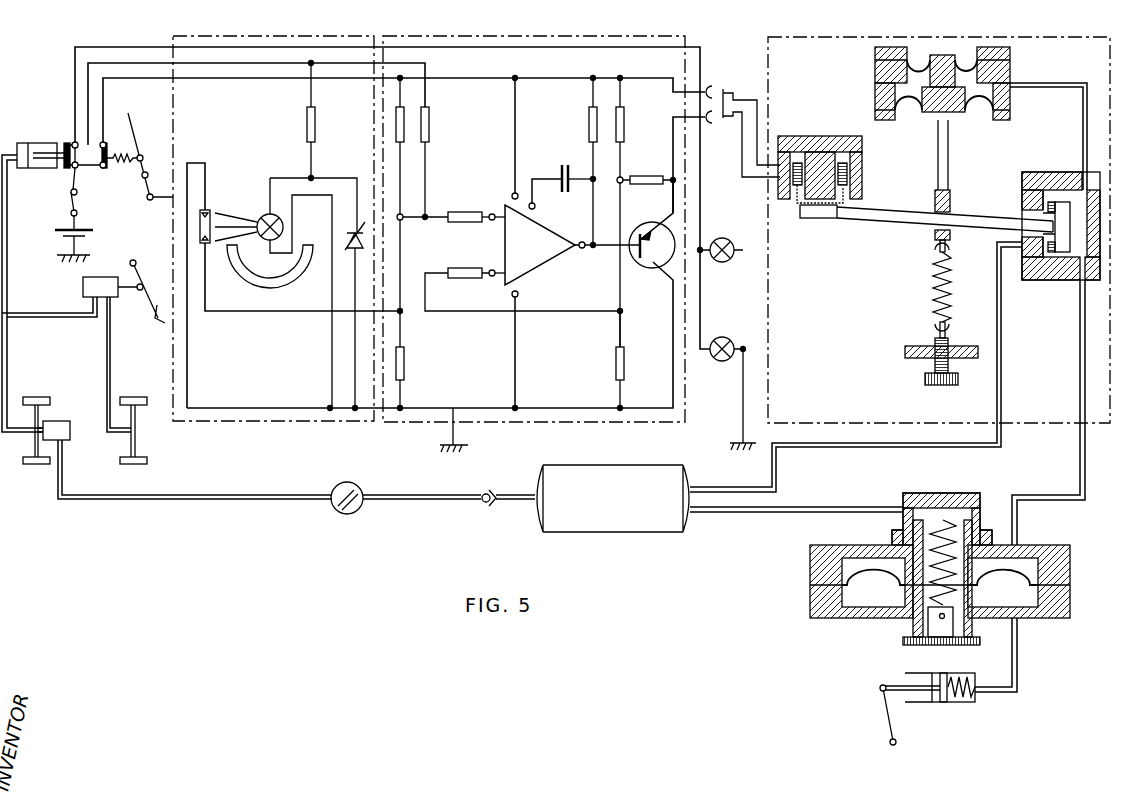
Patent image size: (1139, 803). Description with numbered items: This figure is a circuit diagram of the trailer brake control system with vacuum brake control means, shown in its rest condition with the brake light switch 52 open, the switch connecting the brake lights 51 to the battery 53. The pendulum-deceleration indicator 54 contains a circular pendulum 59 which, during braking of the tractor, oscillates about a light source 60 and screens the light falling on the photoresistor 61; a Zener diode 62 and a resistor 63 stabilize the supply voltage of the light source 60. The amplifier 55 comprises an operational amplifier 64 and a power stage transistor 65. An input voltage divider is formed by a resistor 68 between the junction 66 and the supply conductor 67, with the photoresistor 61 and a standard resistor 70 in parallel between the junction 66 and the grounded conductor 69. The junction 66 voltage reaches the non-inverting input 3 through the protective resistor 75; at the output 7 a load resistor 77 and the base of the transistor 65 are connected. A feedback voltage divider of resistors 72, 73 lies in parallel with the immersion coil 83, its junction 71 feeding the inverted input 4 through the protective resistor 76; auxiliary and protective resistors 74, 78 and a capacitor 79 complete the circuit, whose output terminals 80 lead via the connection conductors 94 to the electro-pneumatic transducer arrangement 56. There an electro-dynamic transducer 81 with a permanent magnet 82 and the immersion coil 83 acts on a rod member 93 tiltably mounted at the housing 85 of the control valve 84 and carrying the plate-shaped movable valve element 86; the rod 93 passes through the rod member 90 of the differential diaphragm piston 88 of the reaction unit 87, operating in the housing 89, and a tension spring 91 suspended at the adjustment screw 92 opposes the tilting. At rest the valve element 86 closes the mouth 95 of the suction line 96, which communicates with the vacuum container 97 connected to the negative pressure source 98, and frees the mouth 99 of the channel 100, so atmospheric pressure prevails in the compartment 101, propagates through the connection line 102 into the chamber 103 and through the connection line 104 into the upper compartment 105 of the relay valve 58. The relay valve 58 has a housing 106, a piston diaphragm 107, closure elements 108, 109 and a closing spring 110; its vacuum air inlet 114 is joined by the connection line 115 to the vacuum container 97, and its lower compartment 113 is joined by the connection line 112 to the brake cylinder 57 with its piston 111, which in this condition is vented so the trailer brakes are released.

The non-inverting input 3 is at (492, 213).
The inverted input 4 is at (491, 277).
The output 7 is at (582, 249).
The brake lights 51 is at (722, 238).
The brake light switch 52 is at (73, 143).
The battery 53 is at (88, 233).
The pendulum-deceleration indicator 54 is at (318, 38).
The amplifier 55 is at (560, 38).
The electro-pneumatic transducer arrangement 56 is at (840, 38).
The brake cylinder 57 is at (964, 701).
The relay valve 58 is at (833, 620).
The circular pendulum 59 is at (237, 262).
The light source 60 is at (262, 219).
The photoresistor 61 is at (211, 210).
The Zener diode 62 is at (350, 240).
The resistor 63 is at (307, 126).
The operational amplifier 64 is at (512, 247).
The transistor 65 is at (647, 266).
The junction 66 is at (403, 220).
The supply conductor 67 is at (486, 82).
The resistor 68 is at (396, 135).
The conductor 69 is at (486, 405).
The standard resistor 70 is at (404, 363).
The junction 71 is at (623, 184).
The resistor 72 is at (625, 126).
The resistor 73 is at (650, 176).
The auxiliary resistor 74 is at (430, 126).
The protective resistor 75 is at (463, 211).
The protective resistor 76 is at (463, 279).
The load resistor 77 is at (590, 126).
The protective resistor 78 is at (614, 365).
The capacitor 79 is at (560, 165).
The output terminals 80 is at (724, 90).
The electro-dynamic transducer 81 is at (816, 218).
The permanent magnet 82 is at (821, 146).
The immersion coil 83 is at (850, 174).
The control valve 84 is at (1016, 168).
The housing 85 is at (1037, 195).
The movable valve element 86 is at (1062, 202).
The reaction unit 87 is at (890, 43).
The differential diaphragm piston 88 is at (942, 55).
The housing 89 is at (883, 79).
The rod member 90 is at (940, 153).
The tension spring 91 is at (932, 295).
The adjustment screw 92 is at (934, 366).
The rod member 93 is at (886, 220).
The connection conductors 94 is at (755, 150).
The mouth 95 is at (1043, 267).
The suction line 96 is at (417, 502).
The vacuum container 97 is at (605, 524).
The negative pressure source 98 is at (58, 425).
The mouth 99 is at (1050, 175).
The channel 100 is at (1023, 210).
The compartment 101 is at (1075, 250).
The connection line 102 is at (1041, 86).
The chamber 103 is at (967, 70).
The connection line 104 is at (1081, 386).
The upper compartment 105 is at (1030, 566).
The housing 106 is at (818, 597).
The piston diaphragm 107 is at (871, 567).
The closure element 108 is at (916, 613).
The closure element 109 is at (941, 622).
The closing spring 110 is at (946, 548).
The piston 111 is at (941, 695).
The connection line 112 is at (1018, 660).
The lower compartment 113 is at (1027, 600).
The vacuum air inlet 114 is at (916, 503).
The connection line 115 is at (831, 505).